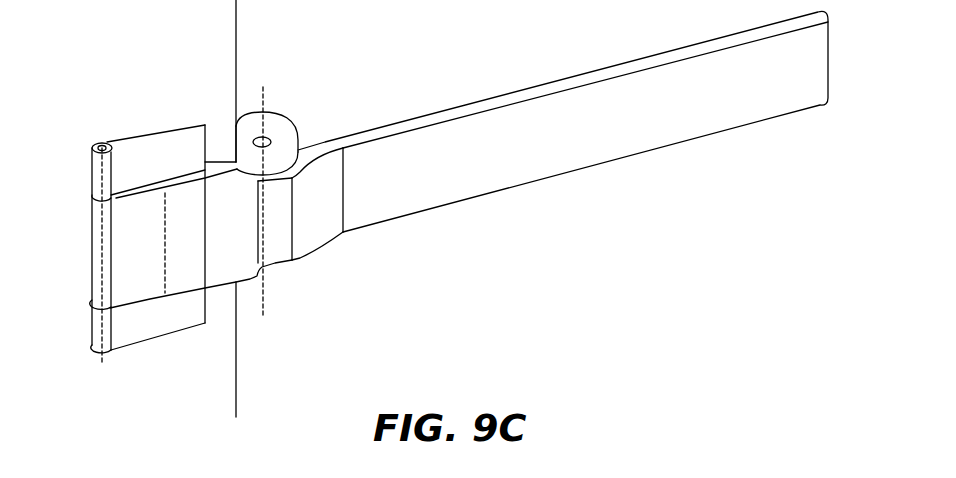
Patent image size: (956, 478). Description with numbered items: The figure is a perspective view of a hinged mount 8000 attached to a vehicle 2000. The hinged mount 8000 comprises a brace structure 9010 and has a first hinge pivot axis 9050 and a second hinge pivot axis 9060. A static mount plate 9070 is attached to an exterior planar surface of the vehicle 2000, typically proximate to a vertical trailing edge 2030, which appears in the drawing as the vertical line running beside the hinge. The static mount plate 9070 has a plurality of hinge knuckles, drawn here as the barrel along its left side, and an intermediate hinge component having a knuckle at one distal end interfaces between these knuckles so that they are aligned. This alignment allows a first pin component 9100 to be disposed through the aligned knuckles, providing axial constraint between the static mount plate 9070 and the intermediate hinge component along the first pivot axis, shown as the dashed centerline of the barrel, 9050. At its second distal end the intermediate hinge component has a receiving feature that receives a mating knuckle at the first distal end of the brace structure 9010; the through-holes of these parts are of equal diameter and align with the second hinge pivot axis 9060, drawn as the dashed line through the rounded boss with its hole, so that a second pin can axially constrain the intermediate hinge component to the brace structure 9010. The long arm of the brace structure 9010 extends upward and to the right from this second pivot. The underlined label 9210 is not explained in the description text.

The vehicle 2000 is at (283, 17).
The vertical trailing edge 2030 is at (238, 396).
The hinge leaf assembly 9210 is at (177, 40).
The static mount plate 9070 is at (158, 141).
The first pin component 9100 is at (138, 332).
The first hinge pivot axis 9050 is at (96, 369).
The second hinge pivot axis 9060 is at (275, 322).
The brace structure 9010 is at (493, 221).
The hinged mount 8000 is at (560, 197).